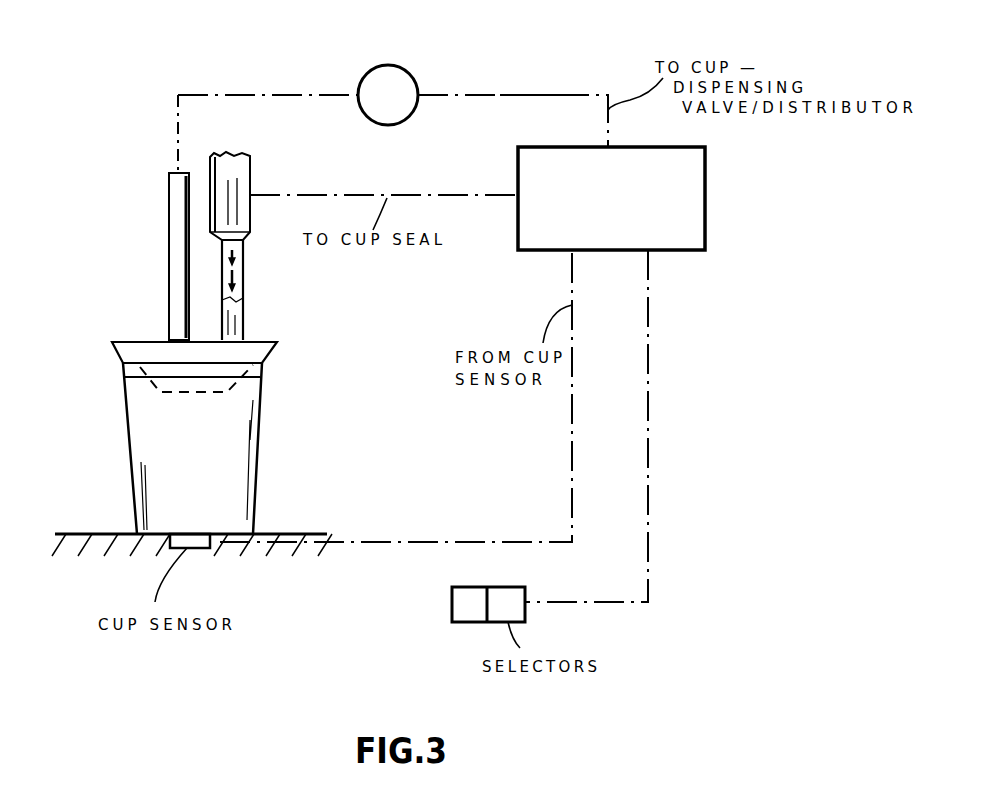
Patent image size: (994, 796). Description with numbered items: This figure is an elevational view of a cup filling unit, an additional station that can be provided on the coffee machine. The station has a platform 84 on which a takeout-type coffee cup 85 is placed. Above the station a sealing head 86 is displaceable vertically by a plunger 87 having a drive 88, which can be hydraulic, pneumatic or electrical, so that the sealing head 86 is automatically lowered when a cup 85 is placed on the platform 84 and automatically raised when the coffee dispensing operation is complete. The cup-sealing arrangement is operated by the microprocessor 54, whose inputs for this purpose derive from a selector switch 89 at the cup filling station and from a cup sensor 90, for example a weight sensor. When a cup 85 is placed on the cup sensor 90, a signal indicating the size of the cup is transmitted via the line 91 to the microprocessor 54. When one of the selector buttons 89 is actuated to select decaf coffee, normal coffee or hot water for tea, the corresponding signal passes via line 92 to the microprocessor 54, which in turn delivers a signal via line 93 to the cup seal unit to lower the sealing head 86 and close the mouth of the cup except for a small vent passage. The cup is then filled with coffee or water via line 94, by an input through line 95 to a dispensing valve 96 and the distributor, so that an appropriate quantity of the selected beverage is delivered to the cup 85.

The microprocessor 54 is at (707, 200).
The platform 84 is at (75, 530).
The takeout-type coffee cup 85 is at (236, 470).
The sealing head 86 is at (270, 348).
The plunger 87 is at (230, 330).
The drive 88 is at (240, 192).
The selector switch 89 is at (452, 600).
The cup sensor 90 is at (203, 548).
The line 91 is at (403, 542).
The line 92 is at (652, 442).
The line 93 is at (460, 198).
The line 94 is at (178, 255).
The line 95 is at (522, 92).
The dispensing valve 96 is at (362, 83).